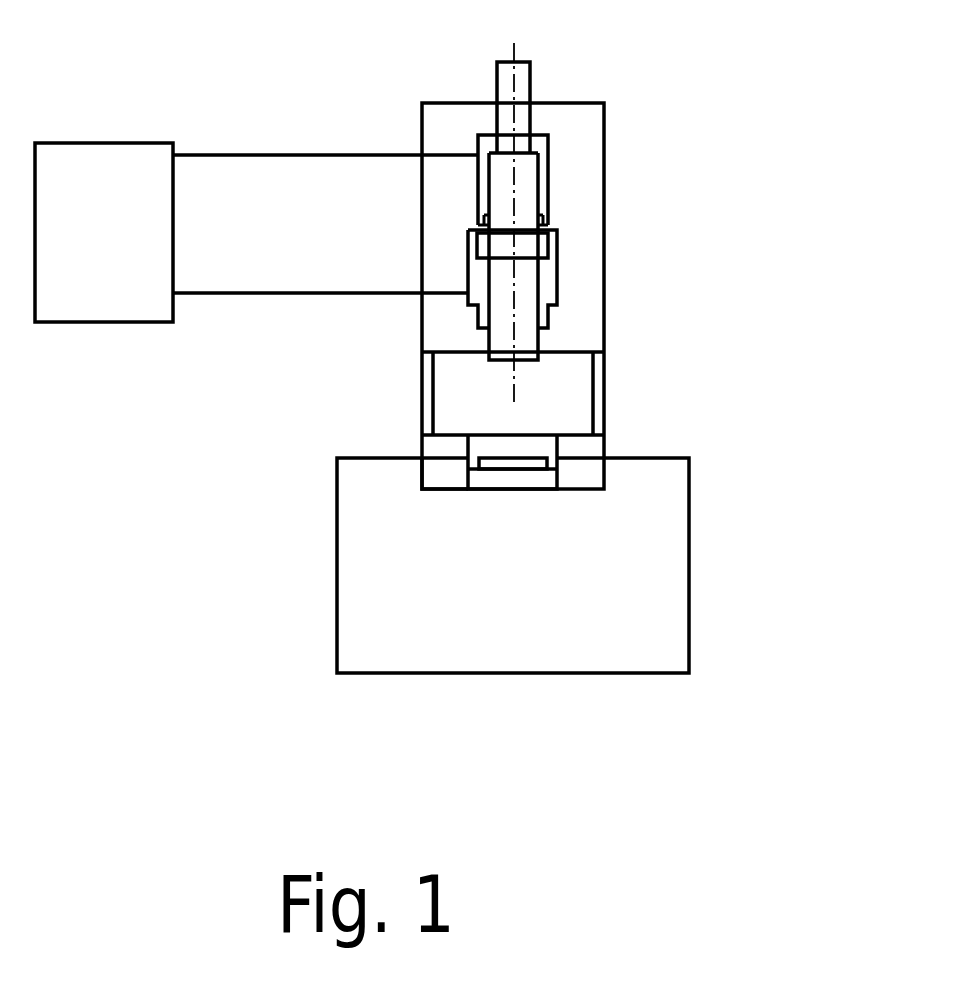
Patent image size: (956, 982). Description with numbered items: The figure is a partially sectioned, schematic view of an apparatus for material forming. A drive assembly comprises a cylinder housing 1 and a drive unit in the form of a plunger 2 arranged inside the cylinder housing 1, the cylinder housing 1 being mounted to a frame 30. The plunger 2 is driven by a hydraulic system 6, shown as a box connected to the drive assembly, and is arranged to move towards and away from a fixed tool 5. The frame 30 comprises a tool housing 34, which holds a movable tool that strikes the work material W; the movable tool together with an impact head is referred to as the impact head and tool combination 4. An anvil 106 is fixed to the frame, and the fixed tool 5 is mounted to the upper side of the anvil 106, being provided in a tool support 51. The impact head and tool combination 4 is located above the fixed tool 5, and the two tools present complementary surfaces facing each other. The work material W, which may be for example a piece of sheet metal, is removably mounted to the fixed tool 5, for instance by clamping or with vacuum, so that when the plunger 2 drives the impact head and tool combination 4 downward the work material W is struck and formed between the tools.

The cylinder housing 1 is at (579, 147).
The plunger 2 is at (535, 243).
The impact head and tool combination 4 is at (488, 445).
The fixed tool 5 is at (540, 479).
The hydraulic system 6 is at (98, 142).
The frame 30 is at (598, 382).
The tool housing 34 is at (435, 448).
The tool support 51 is at (447, 475).
The anvil 106 is at (633, 576).
The work material W is at (508, 465).